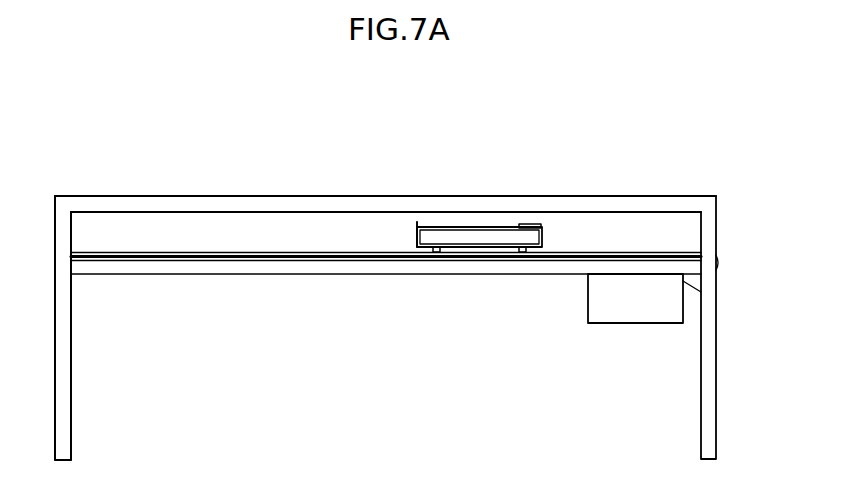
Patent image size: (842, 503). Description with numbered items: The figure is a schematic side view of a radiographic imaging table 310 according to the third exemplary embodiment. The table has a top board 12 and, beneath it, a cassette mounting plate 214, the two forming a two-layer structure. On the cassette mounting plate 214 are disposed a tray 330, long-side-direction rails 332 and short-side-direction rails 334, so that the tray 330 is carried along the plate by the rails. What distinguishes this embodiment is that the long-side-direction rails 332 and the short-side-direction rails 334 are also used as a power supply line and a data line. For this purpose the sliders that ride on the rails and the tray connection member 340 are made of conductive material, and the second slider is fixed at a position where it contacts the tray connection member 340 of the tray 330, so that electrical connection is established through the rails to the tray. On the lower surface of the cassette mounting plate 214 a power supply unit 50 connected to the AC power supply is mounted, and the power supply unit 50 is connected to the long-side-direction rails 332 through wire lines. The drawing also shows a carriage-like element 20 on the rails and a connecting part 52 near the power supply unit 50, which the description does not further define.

The radiographic imaging table 310 is at (716, 147).
The top board 12 is at (622, 210).
The cassette mounting plate 214 is at (136, 273).
The long-side-direction rails 332 is at (340, 260).
The carriage 20 is at (474, 238).
The tray connection member 340 is at (531, 224).
The tray 330 is at (415, 225).
The short-side-direction rails 334 is at (523, 252).
The power supply unit 50 is at (632, 324).
The connecting member 52 is at (700, 293).